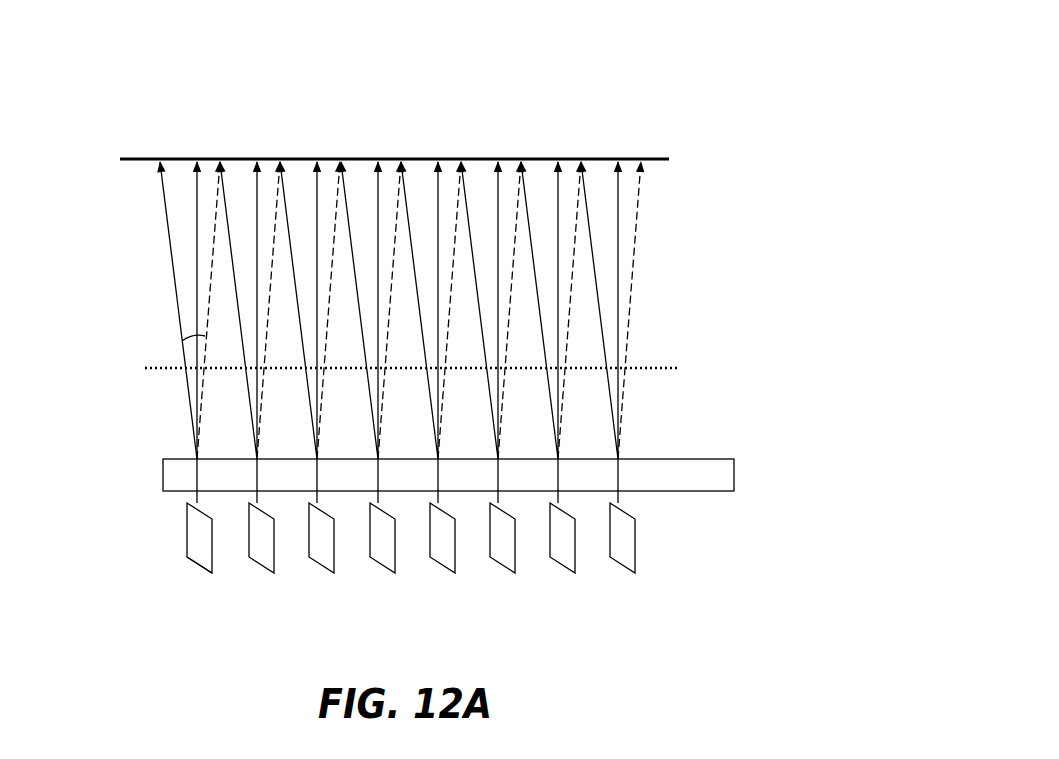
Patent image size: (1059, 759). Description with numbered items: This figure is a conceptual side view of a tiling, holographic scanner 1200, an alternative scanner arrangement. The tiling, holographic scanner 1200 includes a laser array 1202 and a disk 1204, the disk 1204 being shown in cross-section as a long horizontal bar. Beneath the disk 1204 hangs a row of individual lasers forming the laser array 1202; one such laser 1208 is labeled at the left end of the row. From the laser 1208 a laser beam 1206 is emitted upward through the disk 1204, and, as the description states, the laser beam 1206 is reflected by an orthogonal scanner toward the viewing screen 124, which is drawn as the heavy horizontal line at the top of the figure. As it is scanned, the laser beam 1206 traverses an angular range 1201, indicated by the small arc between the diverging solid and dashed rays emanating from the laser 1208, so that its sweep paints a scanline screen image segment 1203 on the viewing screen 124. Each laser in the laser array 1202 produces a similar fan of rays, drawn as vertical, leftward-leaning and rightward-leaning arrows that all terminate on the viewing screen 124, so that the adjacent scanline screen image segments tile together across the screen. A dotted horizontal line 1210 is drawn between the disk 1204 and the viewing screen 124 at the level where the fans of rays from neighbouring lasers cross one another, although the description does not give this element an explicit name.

The tiling holographic scanner 1200 is at (655, 118).
The viewing screen 124 is at (127, 158).
The scanline screen image segment 1203 is at (180, 172).
The angular range 1201 is at (186, 331).
The intermediate plane 1210 is at (145, 368).
The laser array 1202 is at (660, 541).
The disk 1204 is at (163, 492).
The laser beam 1206 is at (187, 497).
The laser 1208 is at (202, 578).